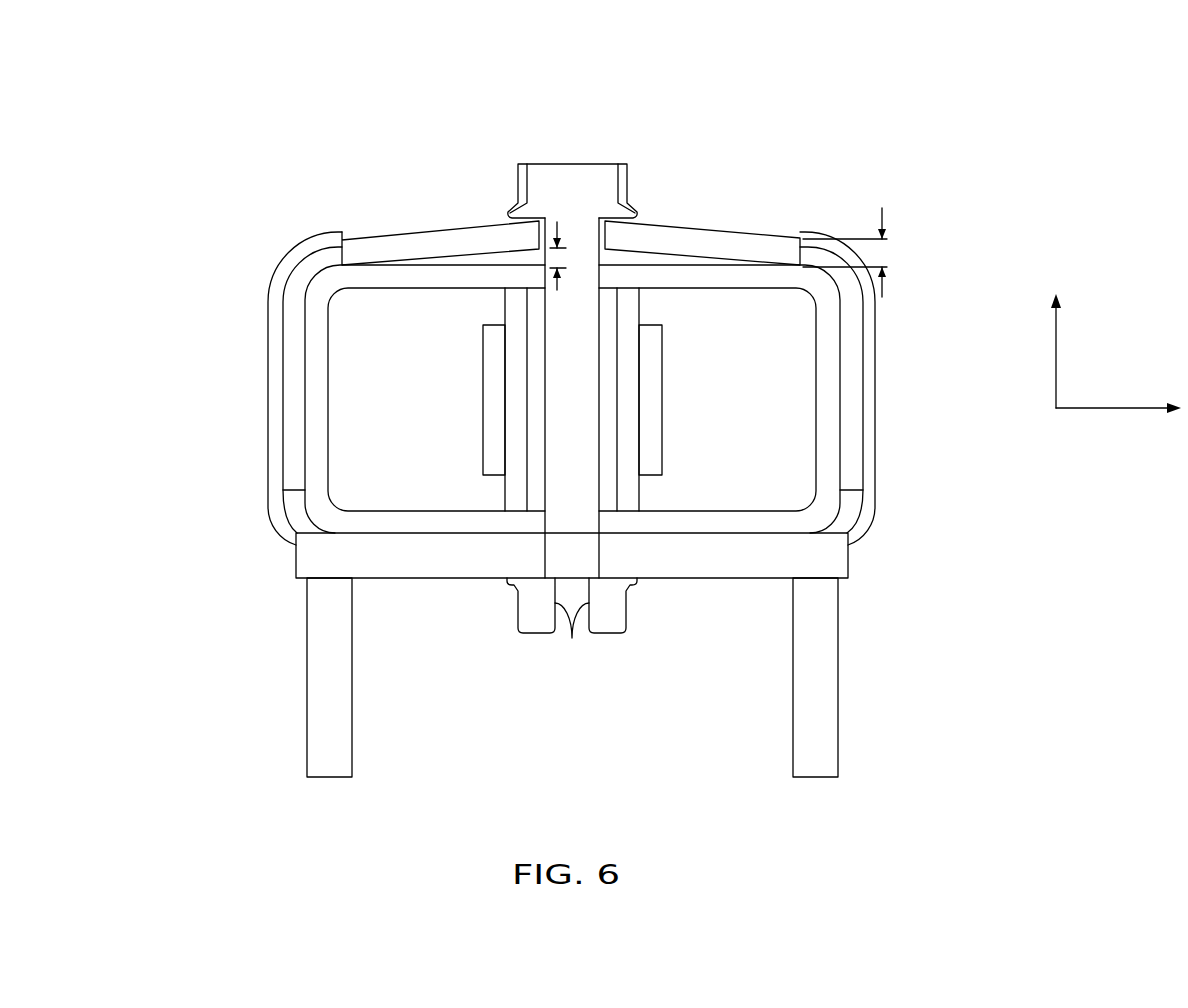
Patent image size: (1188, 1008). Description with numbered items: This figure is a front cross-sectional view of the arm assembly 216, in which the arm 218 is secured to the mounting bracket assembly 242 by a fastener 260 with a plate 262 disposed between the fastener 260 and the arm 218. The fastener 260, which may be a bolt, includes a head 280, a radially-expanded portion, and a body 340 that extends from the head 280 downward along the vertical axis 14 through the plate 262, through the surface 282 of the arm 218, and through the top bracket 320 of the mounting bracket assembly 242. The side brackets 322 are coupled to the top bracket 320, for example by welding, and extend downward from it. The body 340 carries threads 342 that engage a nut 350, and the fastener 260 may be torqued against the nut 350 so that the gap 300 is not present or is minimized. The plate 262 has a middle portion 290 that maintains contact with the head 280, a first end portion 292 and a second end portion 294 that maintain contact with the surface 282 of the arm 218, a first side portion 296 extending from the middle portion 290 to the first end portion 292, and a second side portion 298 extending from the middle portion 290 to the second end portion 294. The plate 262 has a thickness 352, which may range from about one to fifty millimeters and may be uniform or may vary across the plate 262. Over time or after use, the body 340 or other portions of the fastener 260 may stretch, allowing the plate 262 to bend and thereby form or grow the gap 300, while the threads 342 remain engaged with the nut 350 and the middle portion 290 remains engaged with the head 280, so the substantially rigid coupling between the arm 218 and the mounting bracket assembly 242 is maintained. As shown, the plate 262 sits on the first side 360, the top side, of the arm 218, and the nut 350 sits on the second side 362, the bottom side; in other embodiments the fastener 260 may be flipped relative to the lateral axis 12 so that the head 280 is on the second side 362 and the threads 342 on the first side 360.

The lateral axis 12 is at (1115, 408).
The vertical axis 14 is at (1056, 352).
The arm assembly 216 is at (826, 104).
The arm 218 is at (877, 400).
The mounting bracket assembly 242 is at (182, 614).
The fastener 260 is at (590, 108).
The plate 262 is at (459, 163).
The head 280 is at (572, 163).
The surface 282 is at (707, 263).
The middle portion 290 is at (605, 222).
The first end portion 292 is at (788, 238).
The second end portion 294 is at (353, 240).
The first side portion 296 is at (702, 233).
The second side portion 298 is at (437, 232).
The gap 300 is at (557, 285).
The top bracket 320 is at (420, 578).
The side brackets 322 is at (307, 730).
The body 340 is at (593, 375).
The threads 342 is at (572, 638).
The nut 350 is at (627, 610).
The thickness 352 is at (884, 210).
The first side 360 is at (720, 111).
The second side 362 is at (519, 767).